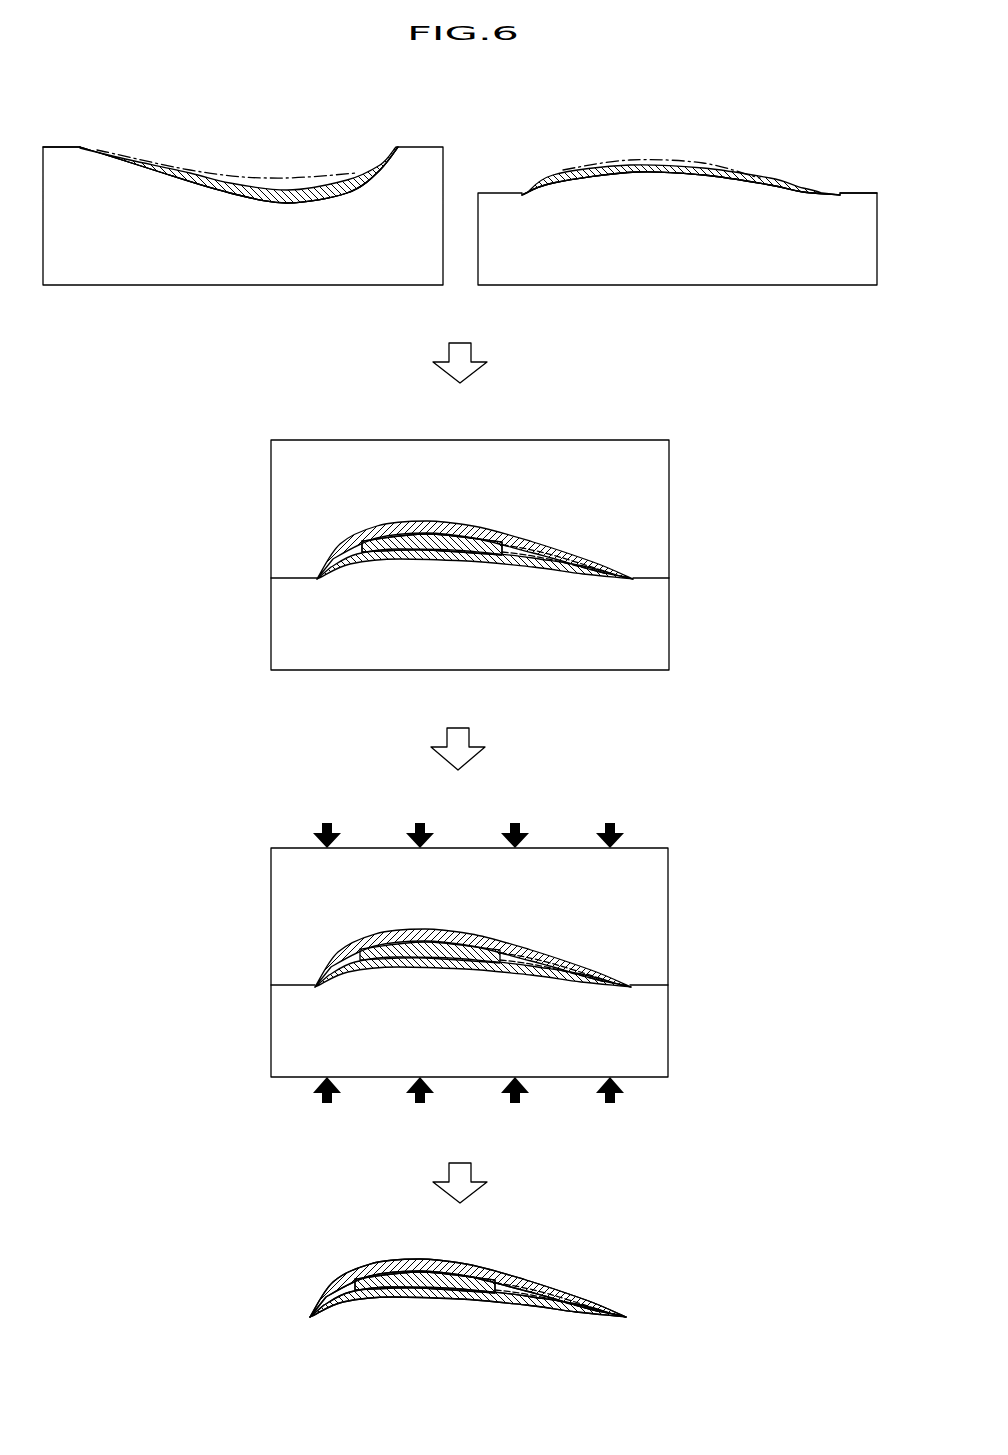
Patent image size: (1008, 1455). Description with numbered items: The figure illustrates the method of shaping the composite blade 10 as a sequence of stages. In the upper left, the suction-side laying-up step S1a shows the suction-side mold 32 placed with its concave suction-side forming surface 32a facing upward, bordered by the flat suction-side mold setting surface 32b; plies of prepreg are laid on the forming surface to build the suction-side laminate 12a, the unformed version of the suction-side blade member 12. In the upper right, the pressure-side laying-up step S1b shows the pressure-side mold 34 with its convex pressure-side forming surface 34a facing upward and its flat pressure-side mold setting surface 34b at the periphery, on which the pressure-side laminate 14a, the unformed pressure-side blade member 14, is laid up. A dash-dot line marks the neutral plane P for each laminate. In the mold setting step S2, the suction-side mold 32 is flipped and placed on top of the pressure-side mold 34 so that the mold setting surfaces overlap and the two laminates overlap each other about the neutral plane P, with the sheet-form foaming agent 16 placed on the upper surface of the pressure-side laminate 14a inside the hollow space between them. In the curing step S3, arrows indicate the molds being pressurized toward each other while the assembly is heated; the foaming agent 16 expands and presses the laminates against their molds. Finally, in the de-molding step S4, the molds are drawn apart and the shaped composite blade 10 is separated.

The composite blade 10 is at (599, 1283).
The suction-side blade member 12 is at (533, 1283).
The suction-side laminate 12a is at (358, 170).
The pressure-side blade member 14 is at (500, 1307).
The pressure-side laminate 14a is at (550, 172).
The foaming agent 16 is at (378, 527).
The suction-side mold 32 is at (87, 287).
The suction-side forming surface 32a is at (123, 157).
The suction-side mold setting surface 32b is at (58, 147).
The pressure-side mold 34 is at (837, 287).
The pressure-side forming surface 34a is at (803, 187).
The pressure-side mold setting surface 34b is at (860, 193).
The neutral plane P is at (192, 170).
The suction-side laying-up step S1a is at (267, 145).
The pressure-side laying-up step S1b is at (712, 145).
The mold setting step S2 is at (681, 453).
The curing step S3 is at (675, 863).
The de-molding step S4 is at (680, 1233).